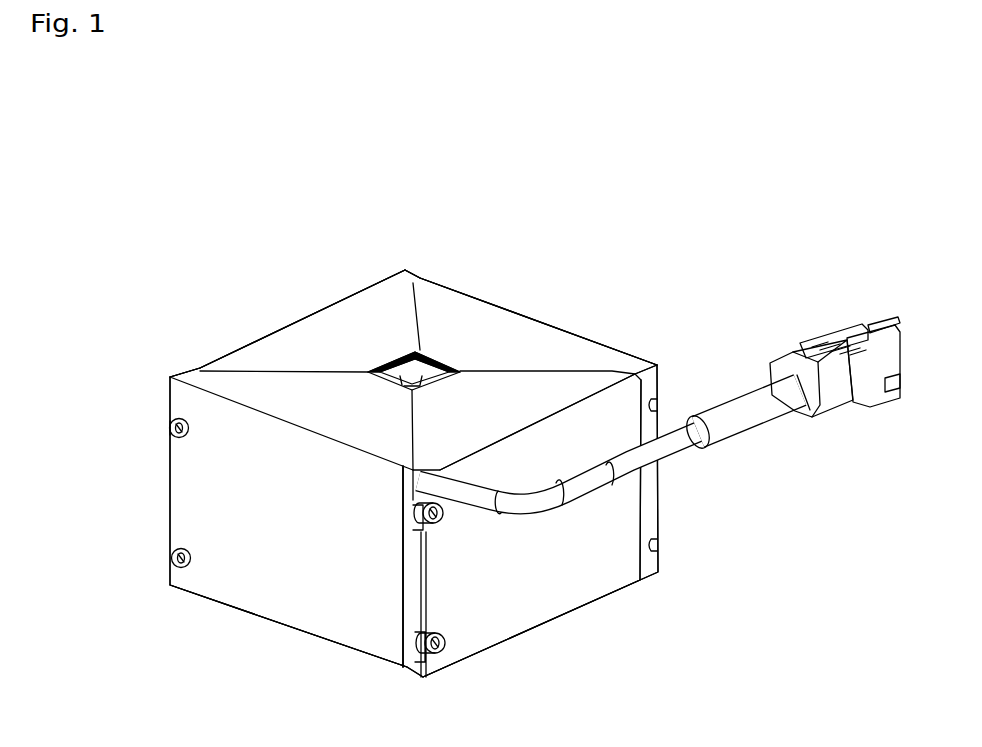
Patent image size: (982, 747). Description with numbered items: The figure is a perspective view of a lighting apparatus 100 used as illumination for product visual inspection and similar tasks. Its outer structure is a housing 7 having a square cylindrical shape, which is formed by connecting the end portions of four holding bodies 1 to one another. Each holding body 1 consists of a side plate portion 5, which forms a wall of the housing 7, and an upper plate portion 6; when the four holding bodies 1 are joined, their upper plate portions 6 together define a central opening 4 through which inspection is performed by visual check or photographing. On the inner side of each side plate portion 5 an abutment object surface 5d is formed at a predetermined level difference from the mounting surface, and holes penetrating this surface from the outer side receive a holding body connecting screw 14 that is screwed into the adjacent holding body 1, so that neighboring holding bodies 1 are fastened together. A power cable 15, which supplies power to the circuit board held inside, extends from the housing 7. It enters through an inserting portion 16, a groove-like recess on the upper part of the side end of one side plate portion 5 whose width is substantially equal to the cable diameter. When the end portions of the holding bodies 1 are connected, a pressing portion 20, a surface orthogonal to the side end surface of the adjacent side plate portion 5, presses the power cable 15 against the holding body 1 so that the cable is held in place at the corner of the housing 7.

The holding body 1 is at (297, 317).
The opening 4 is at (442, 366).
The side plate portion 5 is at (262, 555).
The abutment object surface 5d is at (205, 368).
The upper plate portion 6 is at (465, 408).
The housing 7 is at (363, 662).
The holding body connecting screw 14 is at (173, 553).
The power cable 15 is at (680, 450).
The inserting portion 16 is at (445, 512).
The pressing portion 20 is at (405, 495).
The lighting apparatus 100 is at (612, 300).